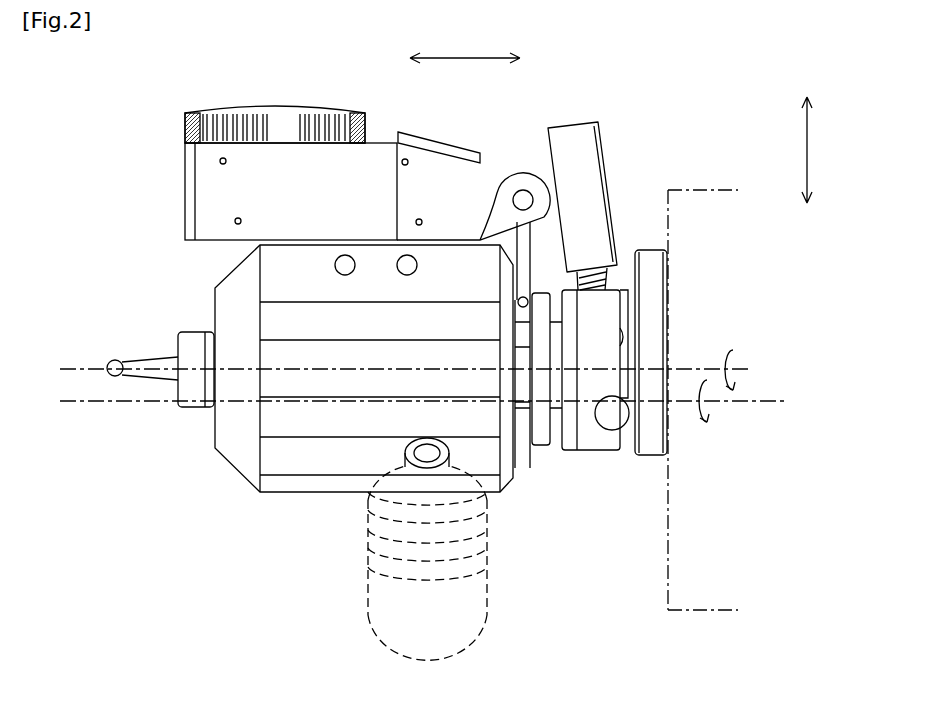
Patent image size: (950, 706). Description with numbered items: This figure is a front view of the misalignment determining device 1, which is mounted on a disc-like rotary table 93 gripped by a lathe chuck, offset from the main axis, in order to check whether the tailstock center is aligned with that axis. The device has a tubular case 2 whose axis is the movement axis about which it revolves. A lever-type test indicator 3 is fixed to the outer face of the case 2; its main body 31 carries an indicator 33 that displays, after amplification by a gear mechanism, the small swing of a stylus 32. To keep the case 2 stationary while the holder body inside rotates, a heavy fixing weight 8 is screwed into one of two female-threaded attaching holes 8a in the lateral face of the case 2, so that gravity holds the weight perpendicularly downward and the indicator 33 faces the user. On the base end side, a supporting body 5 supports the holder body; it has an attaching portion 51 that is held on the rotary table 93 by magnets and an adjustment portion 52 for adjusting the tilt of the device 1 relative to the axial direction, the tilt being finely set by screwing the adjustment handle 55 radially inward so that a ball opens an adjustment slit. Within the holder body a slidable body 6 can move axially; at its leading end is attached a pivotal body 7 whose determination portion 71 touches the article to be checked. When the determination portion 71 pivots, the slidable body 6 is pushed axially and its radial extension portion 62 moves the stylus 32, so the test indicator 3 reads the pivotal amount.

The misalignment determining device 1 is at (636, 100).
The case 2 is at (253, 483).
The test indicator 3 is at (200, 107).
The main body 31 is at (207, 191).
The stylus 32 is at (498, 180).
The indicator 33 is at (275, 104).
The supporting body 5 is at (641, 249).
The attaching portion 51 is at (650, 455).
The adjustment portion 52 is at (590, 448).
The adjustment handle 55 is at (598, 162).
The slidable body 6 is at (523, 410).
The radial extension portion 62 is at (540, 447).
The pivotal body 7 is at (195, 332).
The determination portion 71 is at (110, 355).
The fixing weight 8 is at (368, 555).
The attaching hole 8a is at (412, 465).
The rotary table 93 is at (668, 585).